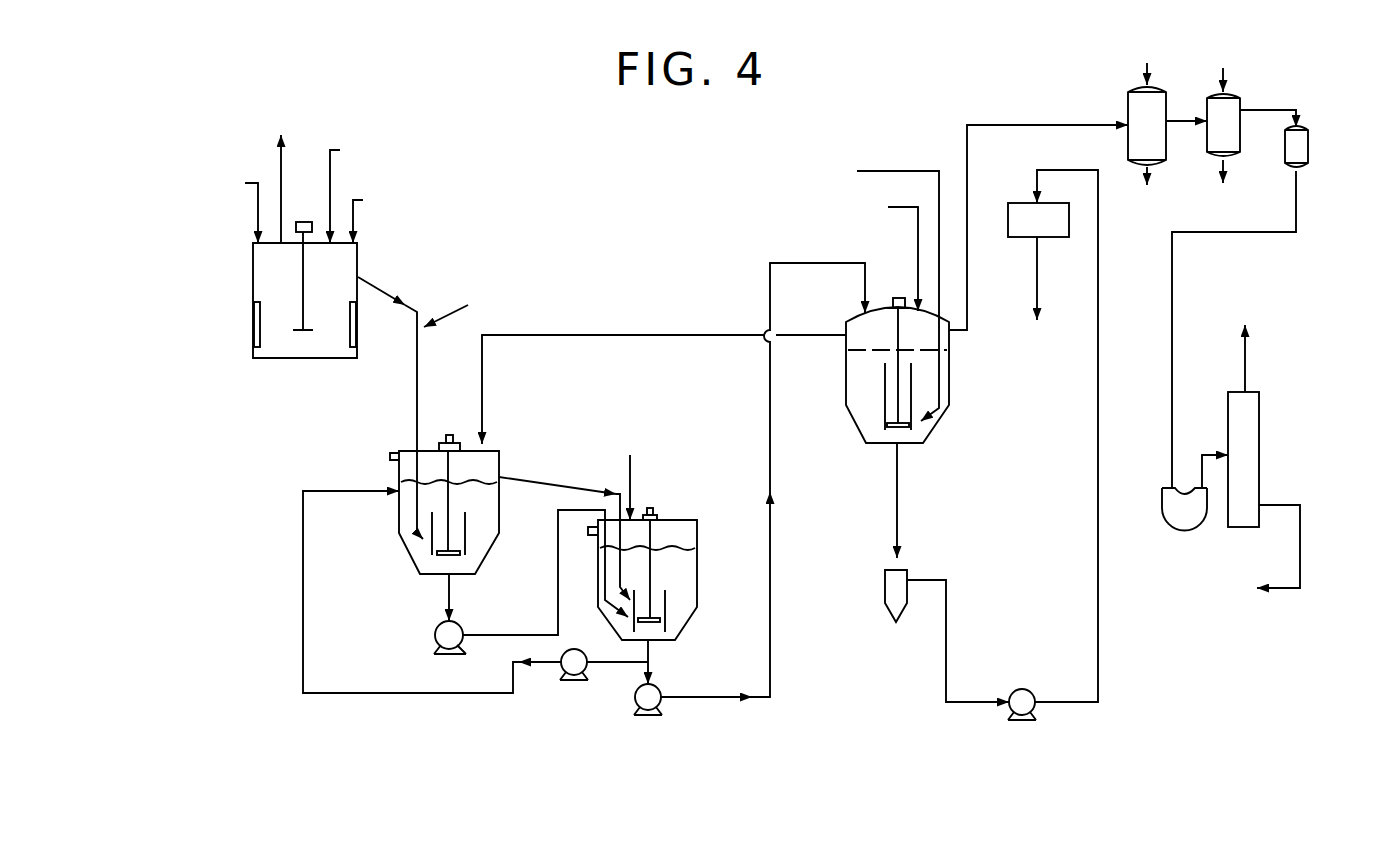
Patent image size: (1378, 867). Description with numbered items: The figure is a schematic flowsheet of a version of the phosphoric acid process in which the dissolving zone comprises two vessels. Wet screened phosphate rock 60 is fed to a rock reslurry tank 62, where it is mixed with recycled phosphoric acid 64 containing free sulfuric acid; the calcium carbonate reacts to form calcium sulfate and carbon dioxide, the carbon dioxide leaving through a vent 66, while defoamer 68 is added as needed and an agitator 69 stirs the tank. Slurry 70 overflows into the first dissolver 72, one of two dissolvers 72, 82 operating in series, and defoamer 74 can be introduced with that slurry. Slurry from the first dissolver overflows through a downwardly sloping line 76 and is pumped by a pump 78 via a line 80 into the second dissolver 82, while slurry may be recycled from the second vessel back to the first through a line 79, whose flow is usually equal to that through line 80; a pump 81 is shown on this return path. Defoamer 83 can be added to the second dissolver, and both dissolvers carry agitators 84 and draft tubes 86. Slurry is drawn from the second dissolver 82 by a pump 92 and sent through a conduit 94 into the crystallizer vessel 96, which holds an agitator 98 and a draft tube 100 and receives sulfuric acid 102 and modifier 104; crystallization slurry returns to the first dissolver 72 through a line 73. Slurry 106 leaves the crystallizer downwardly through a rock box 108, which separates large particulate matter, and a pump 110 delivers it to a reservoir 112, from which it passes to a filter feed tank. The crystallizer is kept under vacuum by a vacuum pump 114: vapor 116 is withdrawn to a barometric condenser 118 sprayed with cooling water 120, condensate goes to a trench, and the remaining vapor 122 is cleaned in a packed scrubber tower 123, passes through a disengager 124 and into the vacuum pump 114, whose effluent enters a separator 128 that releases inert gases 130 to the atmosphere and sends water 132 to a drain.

The wet screened phosphate rock 60 is at (257, 214).
The rock reslurry tank 62 is at (253, 287).
The recycled phosphoric acid 64 is at (330, 192).
The vent 66 is at (281, 183).
The defoamer 68 is at (355, 223).
The agitator 69 is at (296, 318).
The slurry 70 is at (380, 290).
The first dissolver 72 is at (398, 507).
The line 73 is at (703, 312).
The defoamer 74 is at (452, 310).
The downwardly sloping line 76 is at (533, 482).
The pump 78 is at (440, 638).
The line 79 is at (407, 694).
The line 80 is at (557, 589).
The pump 81 is at (562, 674).
The second dissolver 82 is at (697, 569).
The defoamer 83 is at (636, 484).
The agitator 84 is at (440, 560).
The draft tube 86 is at (468, 521).
The pump 92 is at (637, 702).
The conduit 94 is at (772, 640).
The crystallizer vessel 96 is at (952, 407).
The agitator 98 is at (850, 336).
The draft tube 100 is at (883, 404).
The sulfuric acid 102 is at (905, 171).
The modifier 104 is at (917, 230).
The slurry 106 is at (900, 487).
The rock box 108 is at (898, 610).
The pump 110 is at (1014, 708).
The reservoir 112 is at (1053, 228).
The vacuum pump 114 is at (1173, 512).
The vapor 116 is at (1012, 124).
The barometric condenser 118 is at (1145, 101).
The cooling water 120 is at (1145, 72).
The vapor 122 is at (1179, 124).
The packed scrubber tower 123 is at (1230, 132).
The disengager 124 is at (1298, 152).
The separator 128 is at (1260, 408).
The inert gases 130 is at (1246, 363).
The water 132 is at (1302, 554).